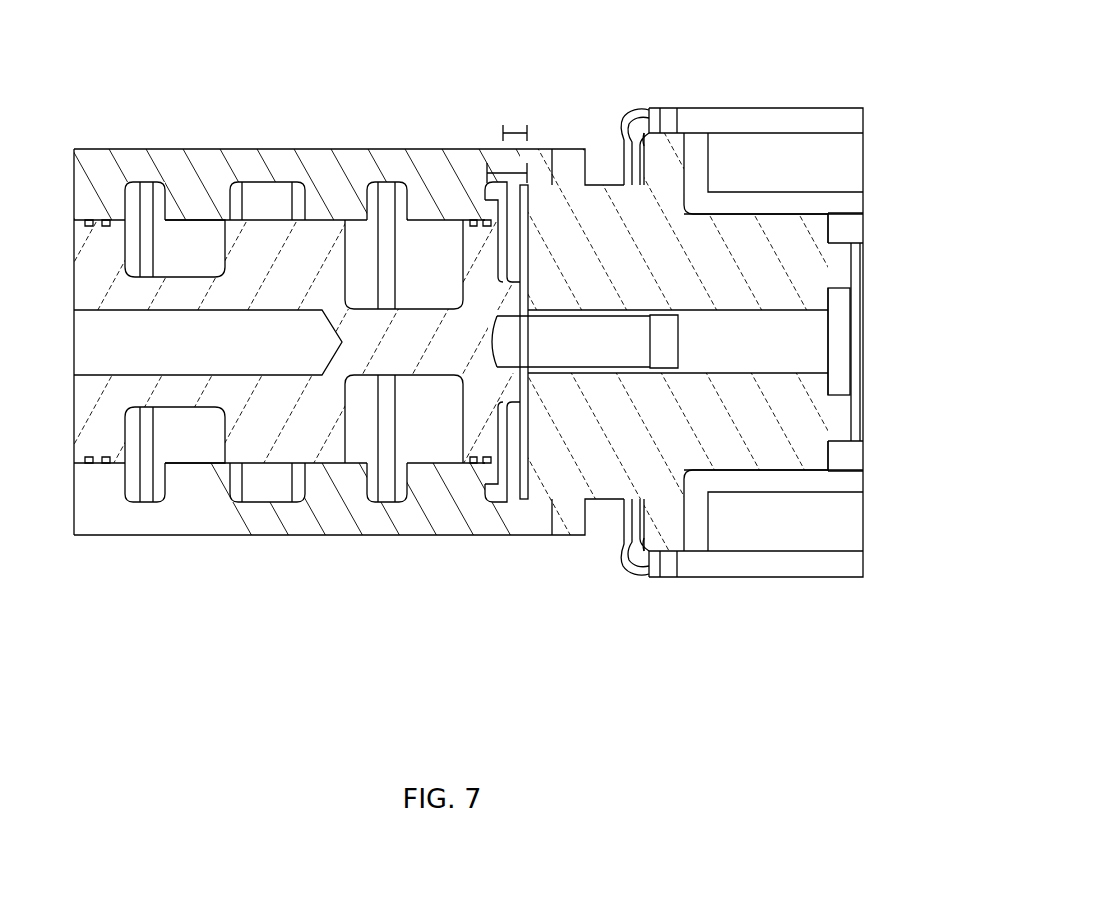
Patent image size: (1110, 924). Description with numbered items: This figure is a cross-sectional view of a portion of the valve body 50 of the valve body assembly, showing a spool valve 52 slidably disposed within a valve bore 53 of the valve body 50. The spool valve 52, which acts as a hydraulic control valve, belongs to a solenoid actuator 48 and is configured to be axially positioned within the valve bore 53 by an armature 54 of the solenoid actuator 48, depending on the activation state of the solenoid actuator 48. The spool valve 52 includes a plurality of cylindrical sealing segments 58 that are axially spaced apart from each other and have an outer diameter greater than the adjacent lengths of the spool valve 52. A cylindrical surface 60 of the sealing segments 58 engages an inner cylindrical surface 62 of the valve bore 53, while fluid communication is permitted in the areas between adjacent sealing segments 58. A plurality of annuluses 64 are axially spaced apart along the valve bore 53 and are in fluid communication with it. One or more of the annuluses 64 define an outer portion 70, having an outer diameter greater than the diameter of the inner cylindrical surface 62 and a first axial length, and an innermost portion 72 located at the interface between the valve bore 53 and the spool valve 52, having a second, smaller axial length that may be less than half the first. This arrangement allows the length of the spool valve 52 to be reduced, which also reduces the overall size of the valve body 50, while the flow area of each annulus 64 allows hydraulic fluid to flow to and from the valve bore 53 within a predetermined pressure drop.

The solenoid actuator 48 is at (705, 108).
The valve body 50 is at (372, 150).
The spool valve 52 is at (320, 257).
The valve bore 53 is at (197, 437).
The armature 54 is at (600, 352).
The cylindrical sealing segment 58 is at (98, 258).
The cylindrical surface 60 is at (310, 463).
The inner cylindrical surface 62 is at (348, 222).
The annulus 64 is at (147, 477).
The outer portion 70 is at (528, 185).
The innermost portion 72 is at (497, 220).